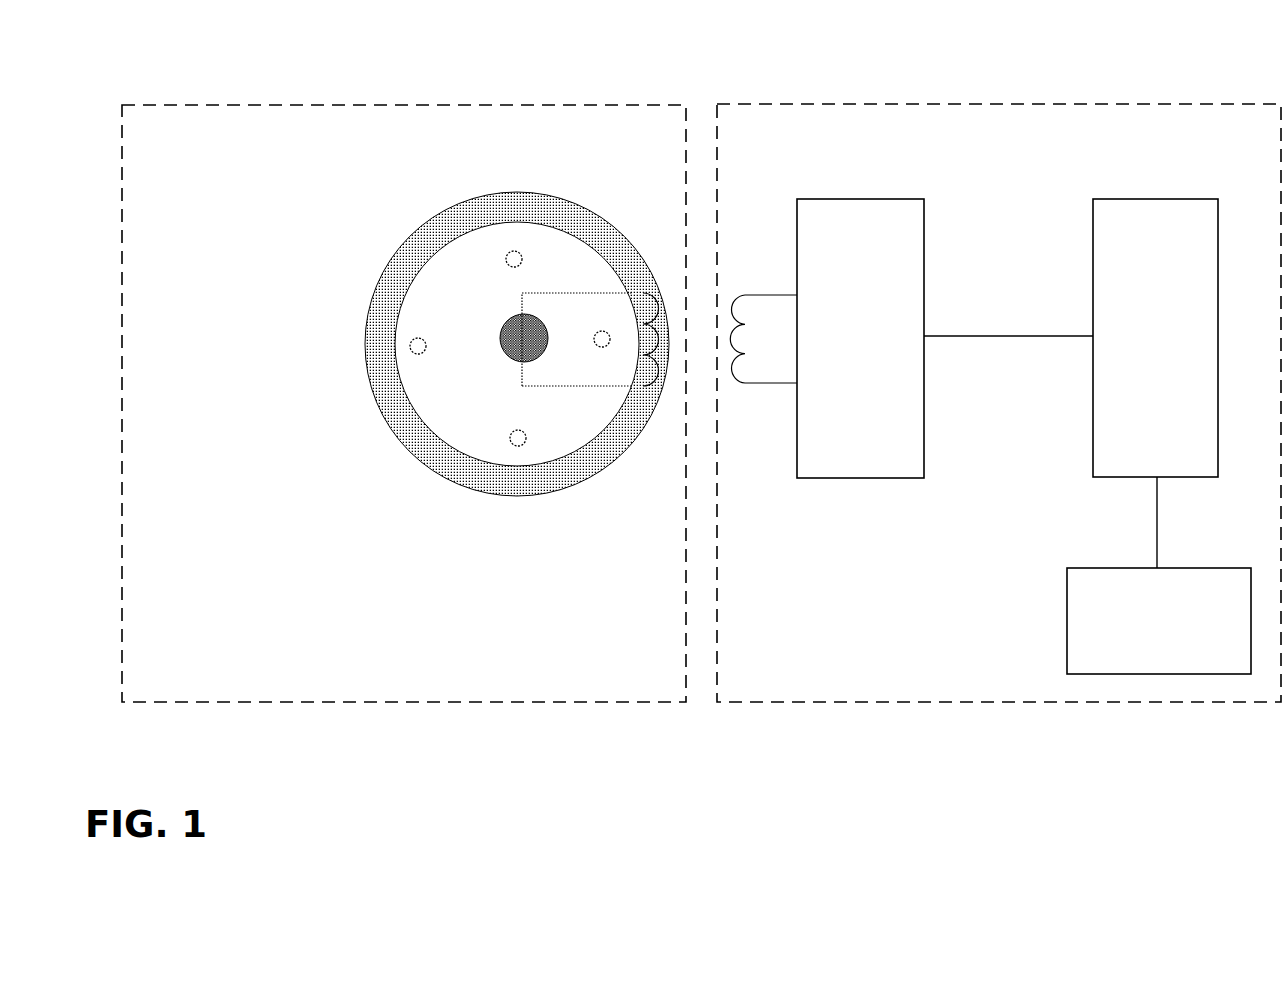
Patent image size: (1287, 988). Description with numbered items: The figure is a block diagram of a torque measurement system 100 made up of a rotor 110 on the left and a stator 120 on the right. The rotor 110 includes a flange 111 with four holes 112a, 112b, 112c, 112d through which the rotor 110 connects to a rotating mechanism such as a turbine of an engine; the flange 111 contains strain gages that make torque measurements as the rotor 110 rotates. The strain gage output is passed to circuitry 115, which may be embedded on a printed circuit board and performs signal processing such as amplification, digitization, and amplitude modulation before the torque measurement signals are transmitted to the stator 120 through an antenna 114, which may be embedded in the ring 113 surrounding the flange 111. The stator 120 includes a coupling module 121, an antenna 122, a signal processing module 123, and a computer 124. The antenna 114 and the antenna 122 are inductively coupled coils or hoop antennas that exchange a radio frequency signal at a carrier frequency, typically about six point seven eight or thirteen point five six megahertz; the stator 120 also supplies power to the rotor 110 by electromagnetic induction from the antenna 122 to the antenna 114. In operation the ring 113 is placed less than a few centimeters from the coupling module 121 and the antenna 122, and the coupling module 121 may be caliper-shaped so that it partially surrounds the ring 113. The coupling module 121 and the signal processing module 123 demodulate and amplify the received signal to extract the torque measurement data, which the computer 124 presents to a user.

The torque measurement system 100 is at (727, 35).
The rotor 110 is at (404, 403).
The flange 111 is at (517, 344).
The hole 112a is at (515, 249).
The hole 112b is at (417, 359).
The hole 112c is at (512, 452).
The hole 112d is at (602, 328).
The ring 113 is at (430, 226).
The antenna 114 is at (642, 390).
The circuitry 115 is at (500, 338).
The stator 120 is at (999, 403).
The coupling module 121 is at (860, 338).
The antenna 122 is at (763, 339).
The signal processing module 123 is at (1155, 338).
The computer 124 is at (1159, 621).